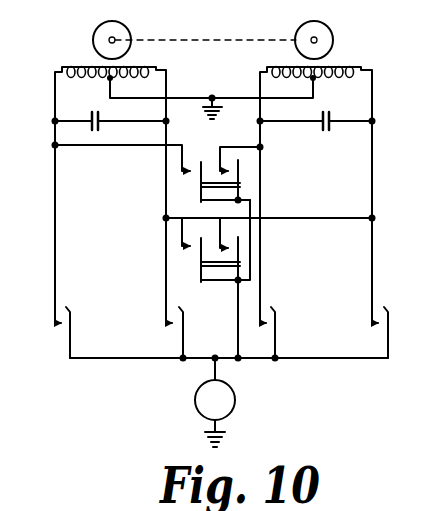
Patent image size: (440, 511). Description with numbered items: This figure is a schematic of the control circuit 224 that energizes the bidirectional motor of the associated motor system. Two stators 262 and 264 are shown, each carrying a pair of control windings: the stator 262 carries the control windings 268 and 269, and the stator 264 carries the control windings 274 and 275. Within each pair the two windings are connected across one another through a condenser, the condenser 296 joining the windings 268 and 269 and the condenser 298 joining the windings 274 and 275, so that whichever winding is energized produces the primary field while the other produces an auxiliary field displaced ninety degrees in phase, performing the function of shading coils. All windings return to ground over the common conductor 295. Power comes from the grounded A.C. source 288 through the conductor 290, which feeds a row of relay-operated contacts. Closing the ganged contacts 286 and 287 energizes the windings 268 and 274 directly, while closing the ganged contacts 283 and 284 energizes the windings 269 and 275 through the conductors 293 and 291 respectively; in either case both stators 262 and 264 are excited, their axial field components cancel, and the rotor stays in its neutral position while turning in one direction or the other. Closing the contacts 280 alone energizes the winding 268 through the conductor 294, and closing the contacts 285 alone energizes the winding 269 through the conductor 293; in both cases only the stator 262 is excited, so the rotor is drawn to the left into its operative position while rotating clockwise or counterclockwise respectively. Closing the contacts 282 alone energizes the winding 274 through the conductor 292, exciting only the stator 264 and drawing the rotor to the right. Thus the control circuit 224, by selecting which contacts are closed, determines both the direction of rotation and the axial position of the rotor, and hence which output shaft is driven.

The control circuit 224 is at (90, 381).
The stator 262 is at (45, 58).
The stator 264 is at (370, 62).
The control winding 268 is at (84, 64).
The control winding 269 is at (147, 66).
The control winding 274 is at (283, 66).
The control winding 275 is at (336, 66).
The conductor 295 is at (173, 96).
The condenser 296 is at (103, 115).
The condenser 298 is at (311, 131).
The conductor 294 is at (52, 168).
The conductor 293 is at (165, 173).
The conductor 292 is at (264, 122).
The conductor 291 is at (374, 146).
The ganged contacts 286 is at (196, 163).
The ganged contacts 283 is at (198, 240).
The ganged contacts 287 is at (238, 161).
The ganged contacts 284 is at (238, 238).
The contacts 280 is at (66, 312).
The contacts 285 is at (177, 312).
The contacts 282 is at (270, 312).
The conductor 290 is at (211, 363).
The A.C. source 288 is at (236, 400).